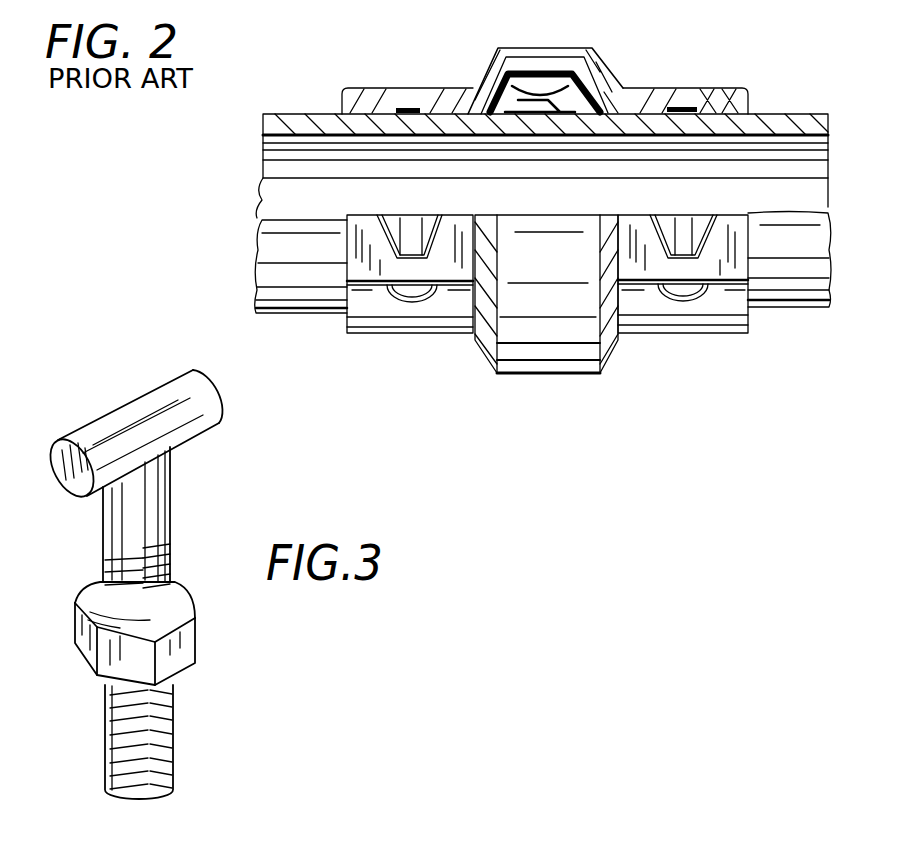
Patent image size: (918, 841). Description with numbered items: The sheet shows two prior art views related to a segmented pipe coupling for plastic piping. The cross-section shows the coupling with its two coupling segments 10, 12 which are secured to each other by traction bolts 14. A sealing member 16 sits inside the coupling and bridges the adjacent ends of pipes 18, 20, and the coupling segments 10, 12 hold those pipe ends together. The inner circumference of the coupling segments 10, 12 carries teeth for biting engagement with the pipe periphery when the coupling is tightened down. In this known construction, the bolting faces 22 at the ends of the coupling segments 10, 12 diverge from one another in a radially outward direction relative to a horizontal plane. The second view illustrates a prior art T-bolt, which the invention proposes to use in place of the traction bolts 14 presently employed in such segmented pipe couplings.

The coupling segment 10 is at (568, 48).
The coupling segment 12 is at (573, 350).
The traction bolt 14 is at (430, 300).
The sealing member 16 is at (531, 70).
The pipe 18 is at (802, 300).
The pipe 20 is at (313, 305).
The bolting face 22 is at (463, 113).